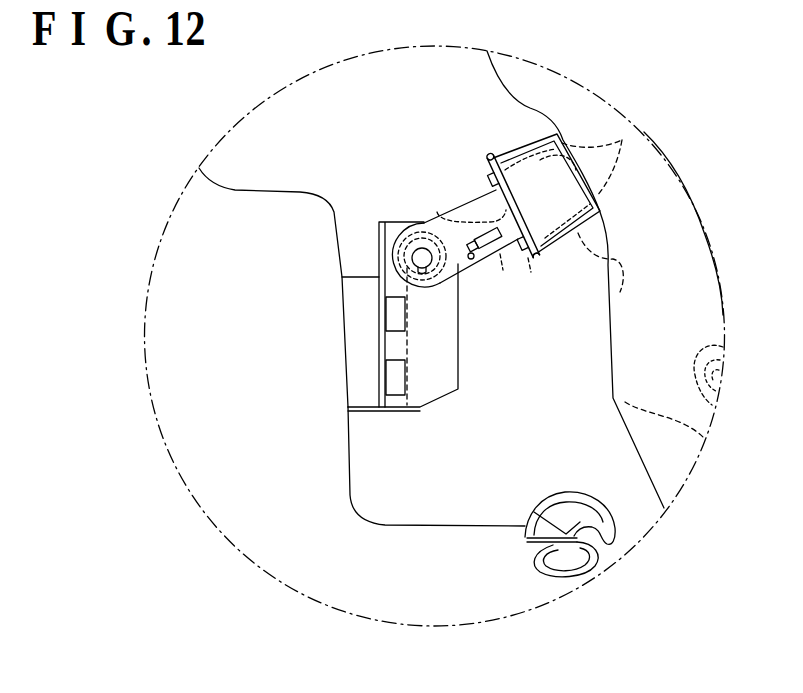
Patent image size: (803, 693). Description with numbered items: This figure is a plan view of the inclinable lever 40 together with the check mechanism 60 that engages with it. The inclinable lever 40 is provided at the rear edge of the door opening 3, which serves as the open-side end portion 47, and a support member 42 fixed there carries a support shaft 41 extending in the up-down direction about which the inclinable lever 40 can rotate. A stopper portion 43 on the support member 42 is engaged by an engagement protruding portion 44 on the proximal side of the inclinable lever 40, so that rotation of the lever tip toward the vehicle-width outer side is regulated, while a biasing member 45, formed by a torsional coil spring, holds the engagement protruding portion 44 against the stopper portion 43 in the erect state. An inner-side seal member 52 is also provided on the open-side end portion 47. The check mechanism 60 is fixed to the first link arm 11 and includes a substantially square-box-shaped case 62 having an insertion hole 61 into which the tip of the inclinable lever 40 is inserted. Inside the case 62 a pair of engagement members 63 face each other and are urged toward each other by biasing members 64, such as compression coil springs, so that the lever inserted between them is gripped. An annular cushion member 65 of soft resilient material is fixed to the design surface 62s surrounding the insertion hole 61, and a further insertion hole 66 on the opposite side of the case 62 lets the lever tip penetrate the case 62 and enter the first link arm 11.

The door opening 3 is at (220, 183).
The open-side end portion 47 is at (351, 446).
The engagement protruding portion 44 is at (481, 264).
The support member 42 is at (423, 410).
The biasing member 45 is at (378, 233).
The support shaft 41 is at (432, 287).
The stopper portion 43 is at (437, 212).
The insertion hole 61 is at (477, 197).
The design surface 62s is at (485, 245).
The case 62 is at (605, 228).
The check mechanism 60 is at (485, 172).
The engagement member 63 is at (489, 159).
The biasing member 64 is at (607, 273).
The cushion member 65 is at (537, 259).
The insertion hole 66 is at (582, 150).
The first link arm 11 is at (611, 363).
The inclinable lever 40 is at (623, 140).
The inner-side seal member 52 is at (614, 523).